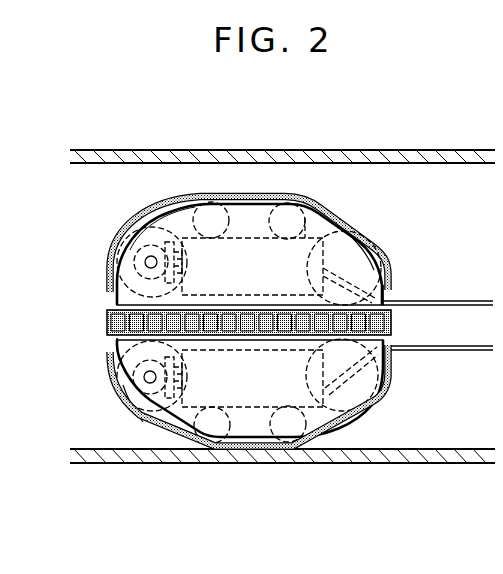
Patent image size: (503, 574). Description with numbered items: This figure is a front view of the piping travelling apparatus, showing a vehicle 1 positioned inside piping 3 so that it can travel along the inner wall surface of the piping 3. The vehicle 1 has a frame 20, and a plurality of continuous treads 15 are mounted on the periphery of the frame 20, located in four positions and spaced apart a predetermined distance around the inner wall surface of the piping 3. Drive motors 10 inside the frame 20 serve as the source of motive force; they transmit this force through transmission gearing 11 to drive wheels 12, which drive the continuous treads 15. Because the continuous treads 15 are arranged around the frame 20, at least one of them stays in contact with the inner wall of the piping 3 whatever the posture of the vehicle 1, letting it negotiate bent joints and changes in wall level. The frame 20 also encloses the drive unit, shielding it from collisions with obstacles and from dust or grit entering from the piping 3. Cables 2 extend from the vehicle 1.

The vehicle 1 is at (340, 218).
The cables 2 is at (468, 305).
The piping 3 is at (132, 156).
The drive motor 10 is at (207, 253).
The transmission gearing 11 is at (147, 260).
The drive wheel 12 is at (143, 414).
The continuous tread 15 is at (115, 404).
The frame 20 is at (118, 303).